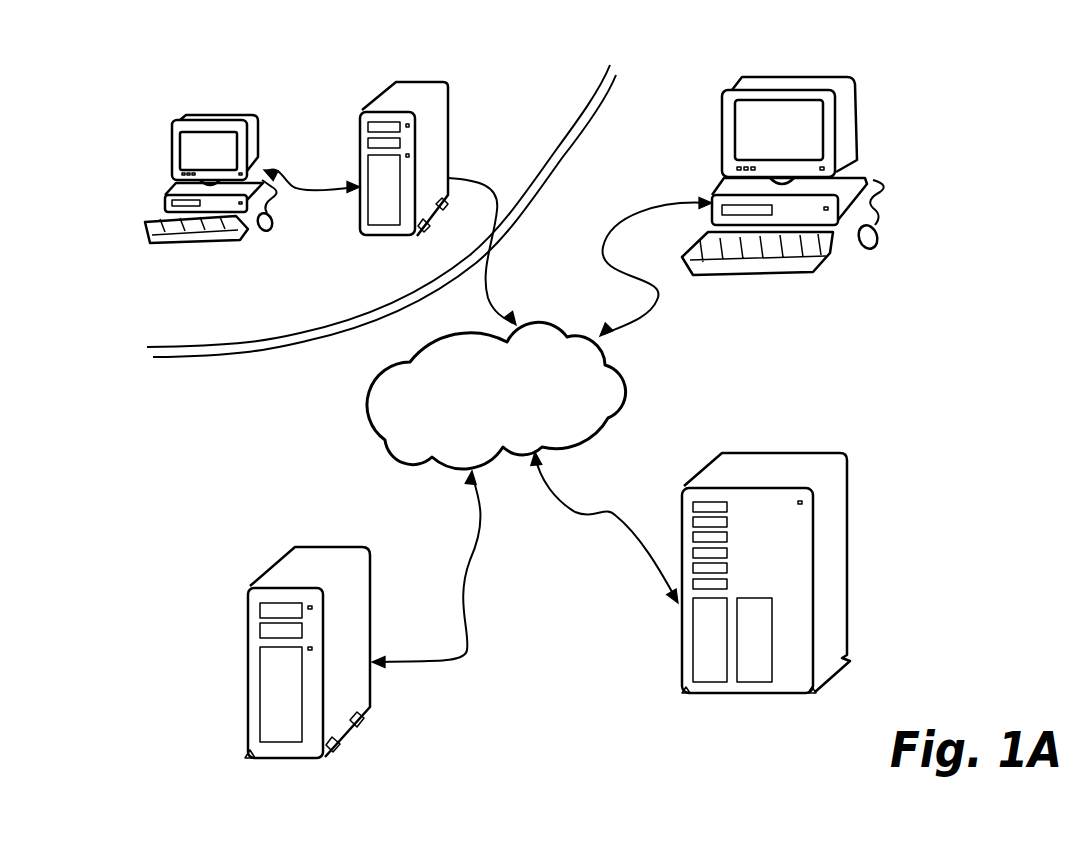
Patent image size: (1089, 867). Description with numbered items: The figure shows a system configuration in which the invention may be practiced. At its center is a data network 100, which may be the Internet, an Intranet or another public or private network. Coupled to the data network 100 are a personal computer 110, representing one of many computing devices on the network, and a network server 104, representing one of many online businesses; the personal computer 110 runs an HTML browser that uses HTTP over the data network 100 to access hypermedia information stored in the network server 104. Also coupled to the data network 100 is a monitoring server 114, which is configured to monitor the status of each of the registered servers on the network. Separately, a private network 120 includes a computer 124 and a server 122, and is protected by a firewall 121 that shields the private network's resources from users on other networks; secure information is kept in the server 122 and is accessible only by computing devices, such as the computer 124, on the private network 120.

The data network 100 is at (627, 377).
The network server 104 is at (353, 622).
The personal computer 110 is at (863, 177).
The monitoring server 114 is at (755, 470).
The private network 120 is at (540, 86).
The firewall 121 is at (617, 68).
The server 122 is at (403, 98).
The computer 124 is at (195, 128).